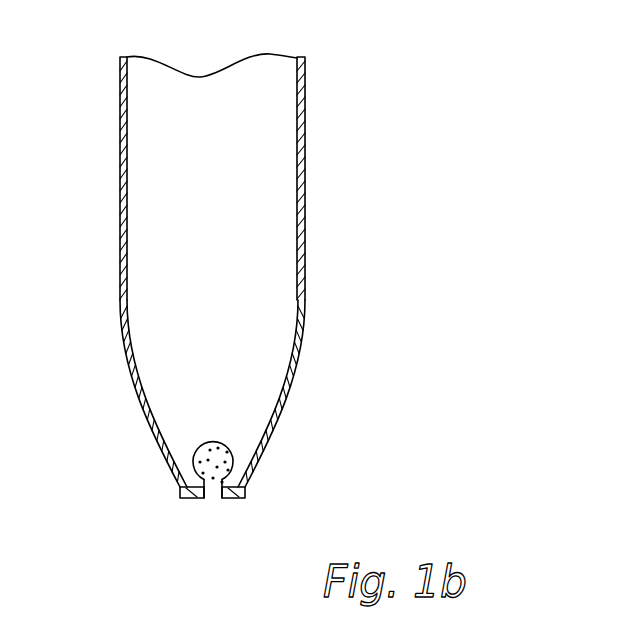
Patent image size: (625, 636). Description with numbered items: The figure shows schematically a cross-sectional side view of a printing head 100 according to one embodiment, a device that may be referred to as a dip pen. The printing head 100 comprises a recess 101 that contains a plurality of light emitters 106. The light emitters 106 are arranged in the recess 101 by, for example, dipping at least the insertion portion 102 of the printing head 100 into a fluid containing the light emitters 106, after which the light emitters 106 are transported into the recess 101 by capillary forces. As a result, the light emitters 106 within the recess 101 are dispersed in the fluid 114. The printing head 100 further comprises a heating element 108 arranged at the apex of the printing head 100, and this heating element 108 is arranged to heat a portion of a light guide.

The printing head 100 is at (309, 315).
The insertion portion 102 is at (290, 445).
The light emitter 106 is at (175, 439).
The fluid 114 is at (199, 468).
The heating element 108 is at (193, 499).
The recess 101 is at (212, 498).